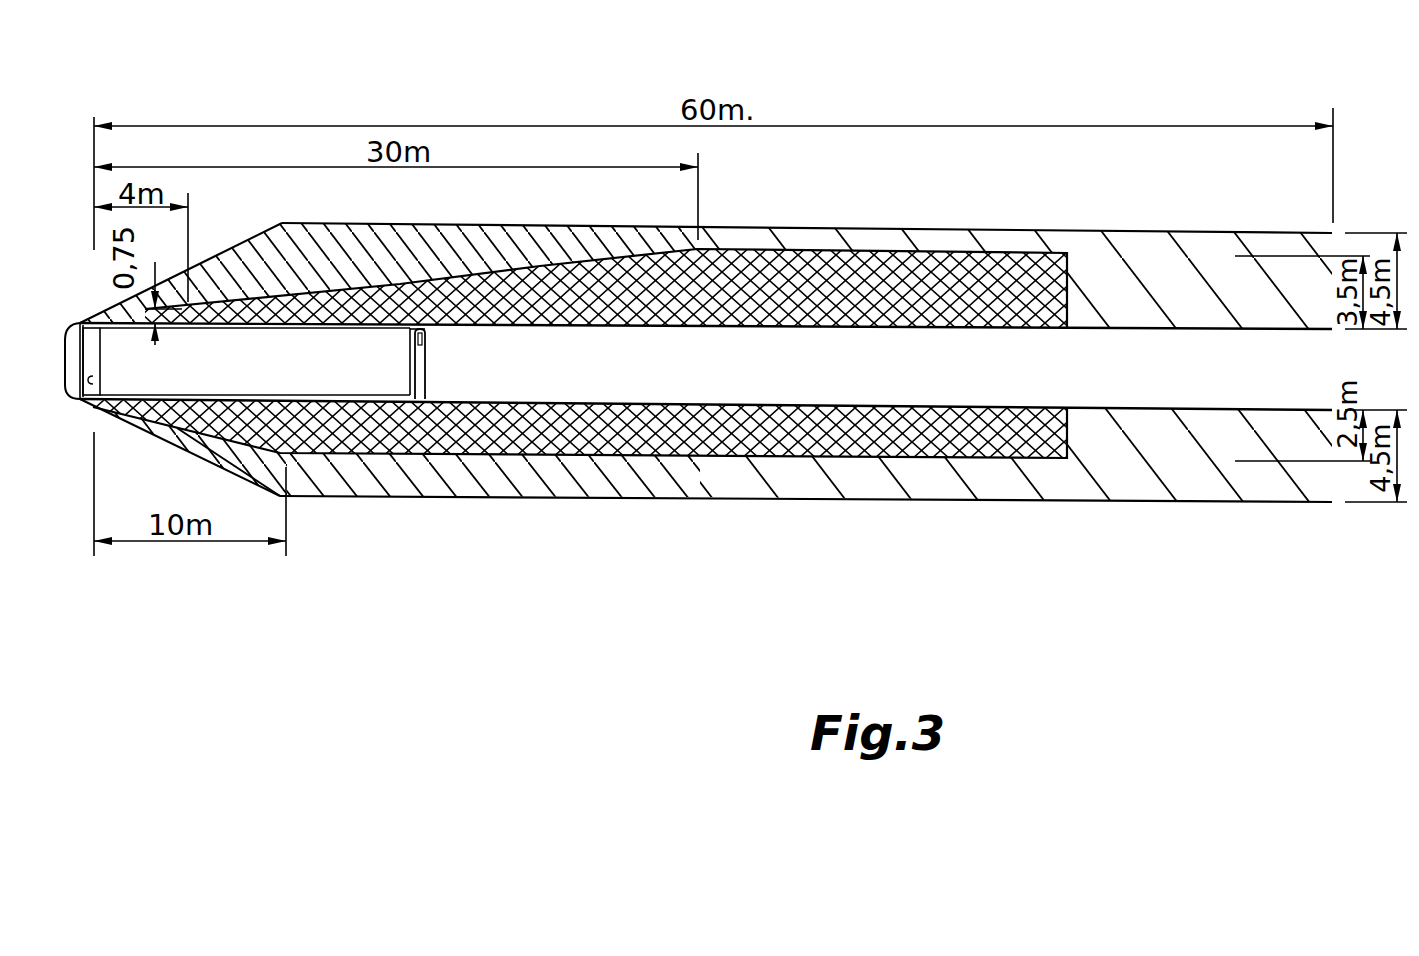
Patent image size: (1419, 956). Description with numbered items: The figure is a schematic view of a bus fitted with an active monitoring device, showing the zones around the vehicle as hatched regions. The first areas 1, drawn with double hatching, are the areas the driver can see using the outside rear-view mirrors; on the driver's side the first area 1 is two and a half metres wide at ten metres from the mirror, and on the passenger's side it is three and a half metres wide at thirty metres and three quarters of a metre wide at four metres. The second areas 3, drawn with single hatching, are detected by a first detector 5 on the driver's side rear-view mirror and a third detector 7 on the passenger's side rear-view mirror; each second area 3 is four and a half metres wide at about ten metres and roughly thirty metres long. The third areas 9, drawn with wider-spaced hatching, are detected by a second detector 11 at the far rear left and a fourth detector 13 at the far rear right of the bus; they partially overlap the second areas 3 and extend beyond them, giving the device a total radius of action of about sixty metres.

The first area 1 is at (942, 262).
The second area 3 is at (428, 240).
The first detector 5 is at (80, 400).
The third detector 7 is at (80, 323).
The third area 9 is at (1177, 262).
The second detector 11 is at (420, 400).
The fourth detector 13 is at (423, 327).